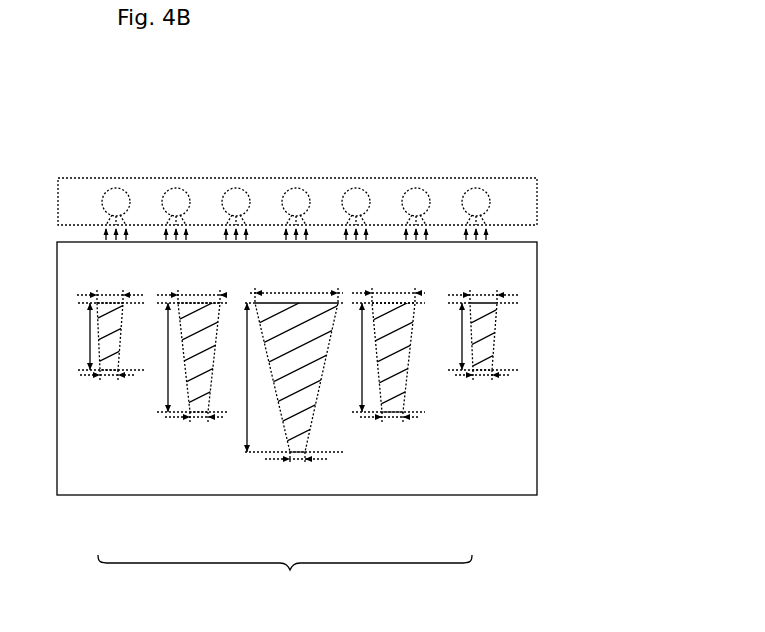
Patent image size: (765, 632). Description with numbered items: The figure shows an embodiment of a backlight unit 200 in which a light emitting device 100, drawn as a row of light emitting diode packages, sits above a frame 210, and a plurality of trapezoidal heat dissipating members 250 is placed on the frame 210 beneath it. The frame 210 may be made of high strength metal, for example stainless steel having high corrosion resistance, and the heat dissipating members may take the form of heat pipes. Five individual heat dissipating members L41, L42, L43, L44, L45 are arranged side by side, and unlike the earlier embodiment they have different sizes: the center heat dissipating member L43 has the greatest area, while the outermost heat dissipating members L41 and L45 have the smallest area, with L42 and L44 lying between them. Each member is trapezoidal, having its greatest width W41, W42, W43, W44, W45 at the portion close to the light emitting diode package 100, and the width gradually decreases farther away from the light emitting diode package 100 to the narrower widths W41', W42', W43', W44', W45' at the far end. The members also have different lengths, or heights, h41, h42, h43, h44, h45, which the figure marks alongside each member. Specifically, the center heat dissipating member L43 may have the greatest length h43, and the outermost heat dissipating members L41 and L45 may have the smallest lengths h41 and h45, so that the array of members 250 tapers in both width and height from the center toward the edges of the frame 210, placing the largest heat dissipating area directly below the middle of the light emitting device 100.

The light emitting device 100 is at (291, 192).
The backlight unit 200 is at (393, 159).
The frame 210 is at (527, 347).
The trapezoidal heat dissipating members 250 is at (285, 574).
The outermost heat dissipating member L41 is at (108, 372).
The heat dissipating member L42 is at (200, 414).
The center heat dissipating member L43 is at (297, 452).
The heat dissipating member L44 is at (392, 414).
The outermost heat dissipating member L45 is at (482, 372).
The greatest width of heat dissipating member L41 W41 is at (111, 283).
The greatest width of heat dissipating member L42 W42 is at (199, 283).
The greatest width of heat dissipating member L43 W43 is at (298, 281).
The greatest width of heat dissipating member L44 W44 is at (394, 281).
The greatest width of heat dissipating member L45 W45 is at (486, 283).
The reduced width of heat dissipating member L41 W41' is at (112, 396).
The reduced width of heat dissipating member L42 W42' is at (204, 441).
The reduced width of heat dissipating member L43 W43' is at (299, 481).
The reduced width of heat dissipating member L44 W44' is at (398, 441).
The reduced width of heat dissipating member L45 W45' is at (488, 396).
The length of heat dissipating member L41 h41 is at (81, 336).
The length of heat dissipating member L42 h42 is at (158, 357).
The length of heat dissipating member L43 h43 is at (238, 377).
The length of heat dissipating member L44 h44 is at (353, 357).
The length of heat dissipating member L45 h45 is at (453, 336).